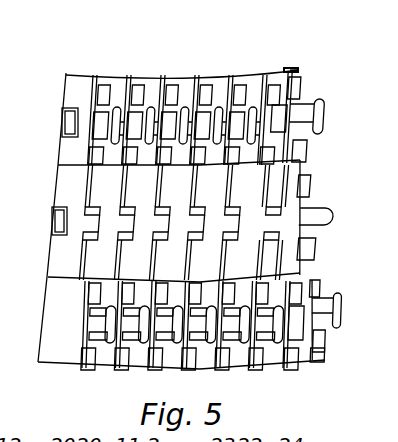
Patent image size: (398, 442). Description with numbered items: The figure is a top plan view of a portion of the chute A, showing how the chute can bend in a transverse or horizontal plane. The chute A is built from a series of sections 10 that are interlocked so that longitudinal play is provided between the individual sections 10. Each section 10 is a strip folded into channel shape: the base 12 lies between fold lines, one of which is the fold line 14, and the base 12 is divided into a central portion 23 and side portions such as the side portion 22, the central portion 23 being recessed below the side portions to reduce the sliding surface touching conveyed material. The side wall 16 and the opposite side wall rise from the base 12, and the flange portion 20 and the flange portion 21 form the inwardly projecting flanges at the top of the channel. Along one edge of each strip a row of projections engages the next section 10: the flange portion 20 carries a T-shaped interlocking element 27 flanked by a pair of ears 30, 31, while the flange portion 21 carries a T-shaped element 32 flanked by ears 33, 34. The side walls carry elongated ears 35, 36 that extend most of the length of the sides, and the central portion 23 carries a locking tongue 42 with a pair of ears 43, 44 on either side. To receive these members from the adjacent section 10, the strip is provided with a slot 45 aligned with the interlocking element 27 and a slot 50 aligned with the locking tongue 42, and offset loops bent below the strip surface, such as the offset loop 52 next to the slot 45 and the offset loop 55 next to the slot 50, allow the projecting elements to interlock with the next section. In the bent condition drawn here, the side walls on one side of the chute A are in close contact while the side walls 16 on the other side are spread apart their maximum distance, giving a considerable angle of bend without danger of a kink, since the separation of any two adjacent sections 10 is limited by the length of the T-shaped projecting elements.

The section 10 is at (148, 83).
The elongated ear 35 is at (195, 77).
The chute A is at (305, 62).
The ear 31 is at (300, 88).
The T-shaped interlocking element 27 is at (317, 117).
The ear 30 is at (307, 147).
The flange portion 20 is at (62, 148).
The base 12 is at (288, 240).
The ear 43 is at (308, 183).
The locking tongue 42 is at (327, 217).
The ear 44 is at (311, 253).
The side portion of base 22 is at (60, 180).
The flange portion 21 is at (137, 360).
The ear 34 is at (315, 283).
The T-shaped element 32 is at (325, 313).
The ear 33 is at (322, 342).
The elongated ear 36 is at (325, 360).
The side wall 16 is at (45, 320).
The slot 45 is at (65, 110).
The offset loop 52 is at (63, 123).
The central portion of base 23 is at (65, 175).
The slot 50 is at (53, 223).
The offset loop 55 is at (60, 213).
The fold line 14 is at (50, 293).